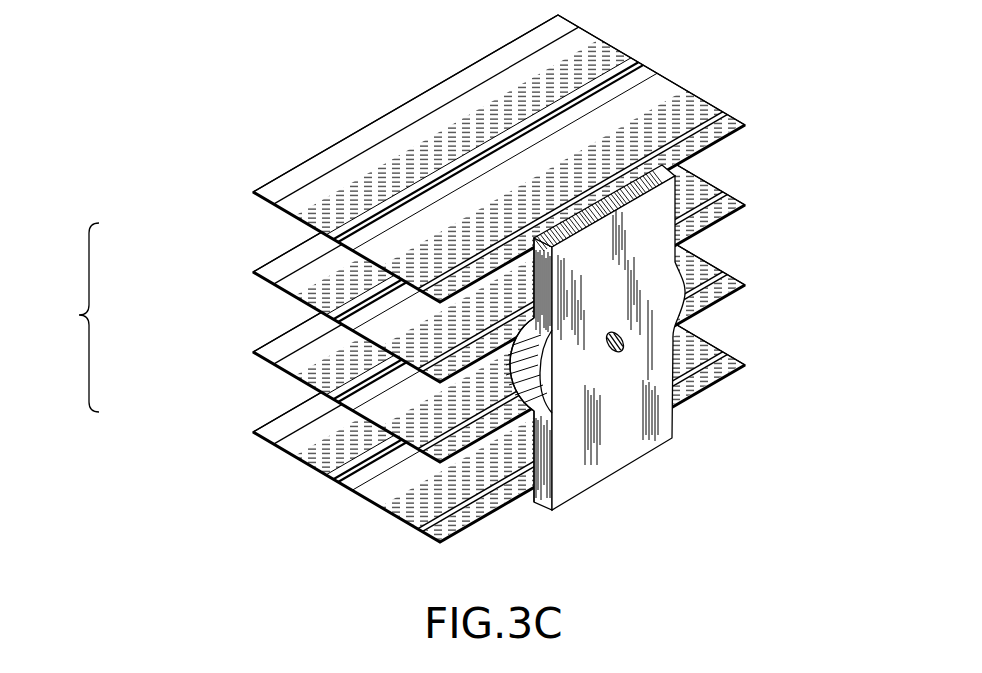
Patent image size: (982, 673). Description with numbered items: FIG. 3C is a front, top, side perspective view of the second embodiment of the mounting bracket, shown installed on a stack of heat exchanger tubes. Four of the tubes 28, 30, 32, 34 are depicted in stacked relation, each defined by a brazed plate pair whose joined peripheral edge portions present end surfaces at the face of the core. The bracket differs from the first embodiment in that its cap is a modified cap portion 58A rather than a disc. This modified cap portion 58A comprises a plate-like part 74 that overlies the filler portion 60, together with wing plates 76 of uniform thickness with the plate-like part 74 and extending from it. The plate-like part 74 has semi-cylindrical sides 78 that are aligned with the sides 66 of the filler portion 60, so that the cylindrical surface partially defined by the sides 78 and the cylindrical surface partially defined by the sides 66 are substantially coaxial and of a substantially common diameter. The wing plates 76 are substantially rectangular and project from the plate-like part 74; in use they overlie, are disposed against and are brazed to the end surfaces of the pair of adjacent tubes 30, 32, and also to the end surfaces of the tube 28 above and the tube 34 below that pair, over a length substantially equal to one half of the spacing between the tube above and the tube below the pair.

The tube 28 is at (768, 107).
The tube 30 is at (768, 192).
The tube 32 is at (766, 272).
The tube 34 is at (766, 348).
The modified cap portion 58A is at (57, 317).
The wing plates 76 is at (540, 257).
The plate-like part 74 is at (533, 372).
The filler portion 60 is at (523, 390).
The sides 66 is at (518, 334).
The semi-cylindrical sides 78 is at (541, 394).